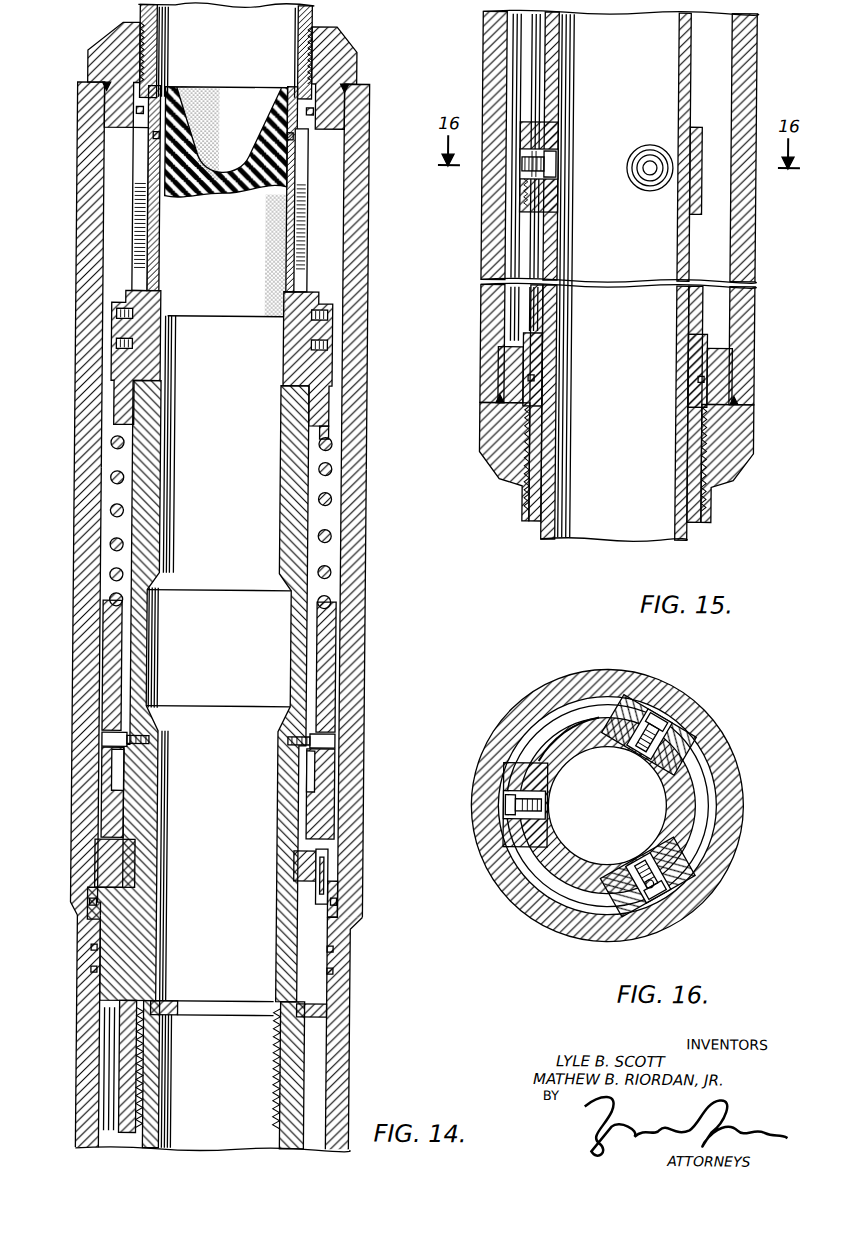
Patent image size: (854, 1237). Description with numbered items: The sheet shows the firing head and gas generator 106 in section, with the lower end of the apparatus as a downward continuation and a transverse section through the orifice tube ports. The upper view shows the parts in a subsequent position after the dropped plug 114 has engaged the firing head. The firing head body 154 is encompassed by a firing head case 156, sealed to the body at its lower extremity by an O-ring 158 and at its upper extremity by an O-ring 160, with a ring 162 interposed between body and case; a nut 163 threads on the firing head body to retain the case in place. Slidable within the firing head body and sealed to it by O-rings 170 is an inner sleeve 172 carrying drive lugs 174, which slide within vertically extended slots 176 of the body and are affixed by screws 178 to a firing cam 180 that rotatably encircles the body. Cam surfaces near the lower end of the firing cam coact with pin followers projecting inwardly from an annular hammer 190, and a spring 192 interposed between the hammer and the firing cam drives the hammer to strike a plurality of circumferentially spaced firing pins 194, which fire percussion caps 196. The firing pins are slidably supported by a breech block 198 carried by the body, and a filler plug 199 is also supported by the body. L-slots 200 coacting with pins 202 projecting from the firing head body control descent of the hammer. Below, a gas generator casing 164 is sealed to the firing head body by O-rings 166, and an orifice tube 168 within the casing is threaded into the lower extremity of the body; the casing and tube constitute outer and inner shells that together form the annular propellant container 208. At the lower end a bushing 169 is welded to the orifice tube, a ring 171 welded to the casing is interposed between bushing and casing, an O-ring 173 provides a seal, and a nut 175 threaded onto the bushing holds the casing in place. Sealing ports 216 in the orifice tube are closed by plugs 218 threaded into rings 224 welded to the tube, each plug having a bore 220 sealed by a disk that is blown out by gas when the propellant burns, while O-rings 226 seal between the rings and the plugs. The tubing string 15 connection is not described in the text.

In FIG. 14, the tubing string 15 is at (310, 15).
In FIG. 15, the gas generator 106 is at (478, 42).
In FIG. 14, the plug 114 is at (215, 637).
In FIG. 14, the firing head body 154 is at (305, 670).
In FIG. 14, the firing head case 156 is at (352, 518).
In FIG. 14, the O-ring 158 is at (92, 905).
In FIG. 14, the O-ring 160 is at (132, 113).
In FIG. 14, the ring 162 is at (335, 118).
In FIG. 14, the nut 163 is at (88, 66).
In FIG. 14, the gas generator casing 164 is at (345, 1052).
In FIG. 15, the gas generator casing 164 is at (745, 72).
In FIG. 16, the gas generator casing 164 is at (686, 700).
In FIG. 14, the O-rings 166 is at (333, 972).
In FIG. 14, the orifice tube 168 is at (128, 1138).
In FIG. 15, the orifice tube 168 is at (688, 31).
In FIG. 15, the bushing 169 is at (705, 338).
In FIG. 16, the bushing 169 is at (698, 812).
In FIG. 14, the O-rings 170 is at (148, 138).
In FIG. 15, the ring 171 is at (730, 358).
In FIG. 16, the ring 171 is at (710, 772).
In FIG. 14, the inner sleeve 172 is at (150, 175).
In FIG. 15, the O-ring 173 is at (702, 377).
In FIG. 14, the drive lugs 174 is at (120, 380).
In FIG. 15, the nut 175 is at (735, 437).
In FIG. 14, the slots 176 is at (137, 234).
In FIG. 14, the screws 178 is at (114, 319).
In FIG. 14, the firing cam 180 is at (320, 418).
In FIG. 14, the annular hammer 190 is at (110, 675).
In FIG. 14, the spring 192 is at (112, 515).
In FIG. 14, the firing pins 194 is at (318, 860).
In FIG. 14, the percussion caps 196 is at (356, 927).
In FIG. 14, the breech block 198 is at (330, 880).
In FIG. 14, the filler plug 199 is at (115, 868).
In FIG. 14, the L-slots 200 is at (108, 775).
In FIG. 14, the pins 202 is at (105, 743).
In FIG. 14, the propellant container 208 is at (302, 1140).
In FIG. 15, the propellant container 208 is at (718, 242).
In FIG. 15, the sealing ports 216 is at (636, 163).
In FIG. 16, the sealing ports 216 is at (512, 778).
In FIG. 15, the plugs 218 is at (516, 186).
In FIG. 16, the plugs 218 is at (680, 722).
In FIG. 15, the bores 220 is at (528, 160).
In FIG. 16, the bores 220 is at (652, 888).
In FIG. 15, the rings 224 is at (698, 196).
In FIG. 16, the rings 224 is at (590, 722).
In FIG. 15, the O-rings 226 is at (518, 200).